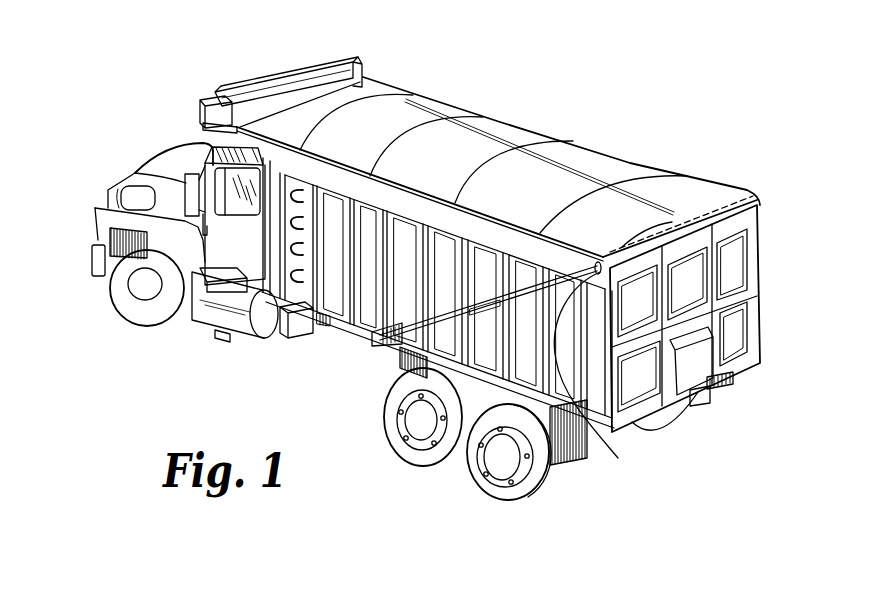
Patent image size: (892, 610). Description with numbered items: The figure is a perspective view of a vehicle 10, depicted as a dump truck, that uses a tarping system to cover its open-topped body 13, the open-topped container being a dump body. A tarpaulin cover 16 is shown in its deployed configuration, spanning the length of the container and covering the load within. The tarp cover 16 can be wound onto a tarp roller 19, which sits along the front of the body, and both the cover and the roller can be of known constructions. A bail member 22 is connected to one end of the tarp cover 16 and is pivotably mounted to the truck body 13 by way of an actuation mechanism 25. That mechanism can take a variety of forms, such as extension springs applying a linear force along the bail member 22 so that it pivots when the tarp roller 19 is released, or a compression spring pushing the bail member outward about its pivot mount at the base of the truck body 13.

The vehicle 10 is at (118, 153).
The open-topped body 13 is at (747, 257).
The tarpaulin cover 16 is at (508, 127).
The tarp roller 19 is at (313, 65).
The bail member 22 is at (618, 458).
The actuation mechanism 25 is at (397, 350).